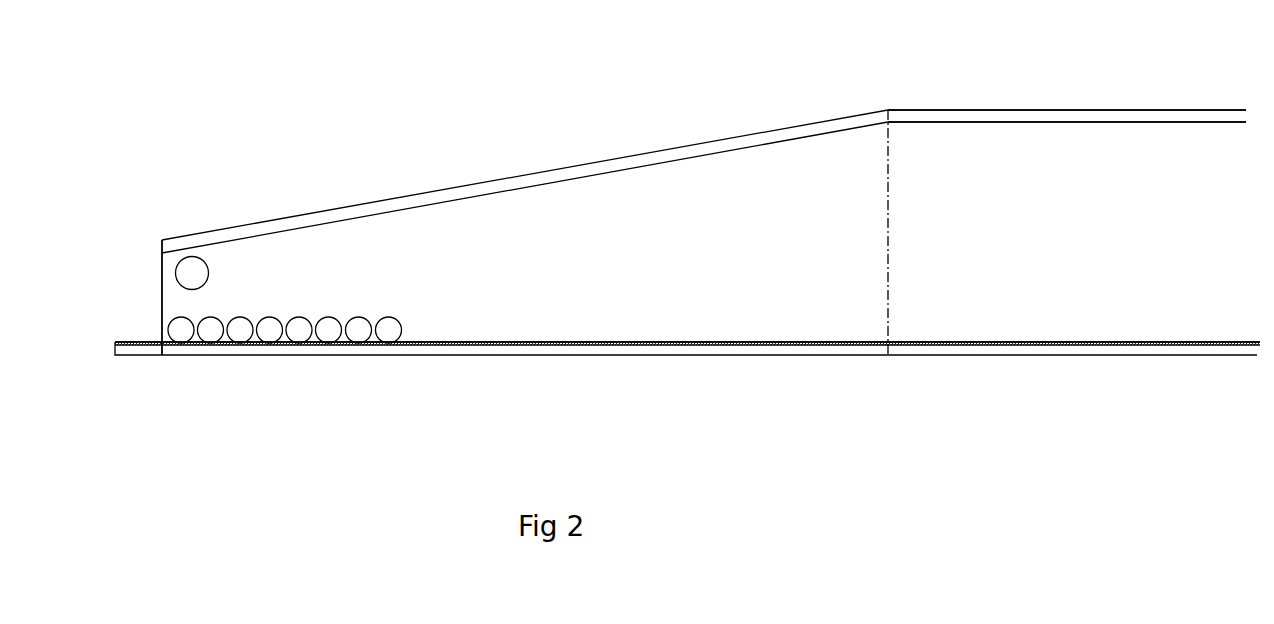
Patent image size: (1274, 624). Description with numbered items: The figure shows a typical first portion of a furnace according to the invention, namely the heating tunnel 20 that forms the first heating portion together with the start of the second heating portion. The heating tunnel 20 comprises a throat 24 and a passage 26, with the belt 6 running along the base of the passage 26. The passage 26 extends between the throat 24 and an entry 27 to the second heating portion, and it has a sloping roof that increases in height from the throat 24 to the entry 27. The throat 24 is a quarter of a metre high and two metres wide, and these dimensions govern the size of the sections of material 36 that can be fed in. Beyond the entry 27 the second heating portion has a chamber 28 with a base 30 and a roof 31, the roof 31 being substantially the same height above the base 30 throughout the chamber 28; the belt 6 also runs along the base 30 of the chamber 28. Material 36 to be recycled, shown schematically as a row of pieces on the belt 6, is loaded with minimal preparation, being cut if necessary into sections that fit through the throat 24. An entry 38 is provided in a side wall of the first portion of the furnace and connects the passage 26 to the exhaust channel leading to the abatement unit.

The belt 6 is at (730, 345).
The heating tunnel 20 is at (537, 170).
The throat 24 is at (159, 295).
The passage 26 is at (372, 253).
The entry 27 is at (885, 200).
The chamber 28 is at (1057, 238).
The base 30 is at (1077, 357).
The roof 31 is at (996, 121).
The material 36 is at (240, 335).
The entry 38 is at (191, 271).